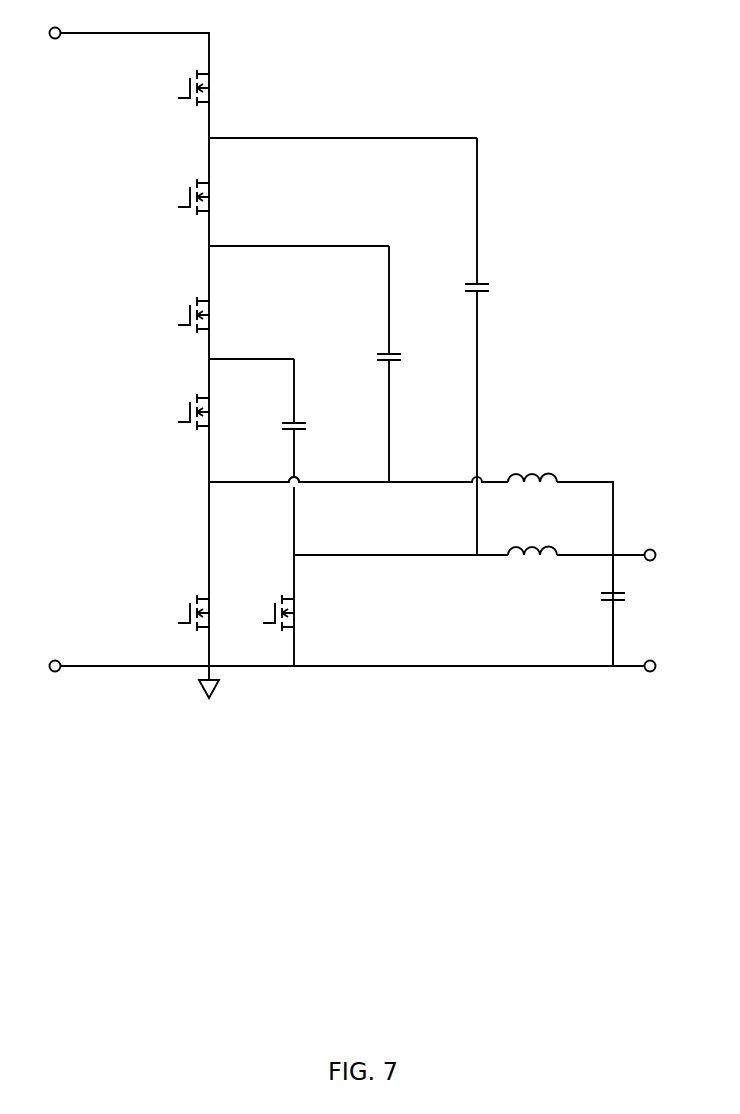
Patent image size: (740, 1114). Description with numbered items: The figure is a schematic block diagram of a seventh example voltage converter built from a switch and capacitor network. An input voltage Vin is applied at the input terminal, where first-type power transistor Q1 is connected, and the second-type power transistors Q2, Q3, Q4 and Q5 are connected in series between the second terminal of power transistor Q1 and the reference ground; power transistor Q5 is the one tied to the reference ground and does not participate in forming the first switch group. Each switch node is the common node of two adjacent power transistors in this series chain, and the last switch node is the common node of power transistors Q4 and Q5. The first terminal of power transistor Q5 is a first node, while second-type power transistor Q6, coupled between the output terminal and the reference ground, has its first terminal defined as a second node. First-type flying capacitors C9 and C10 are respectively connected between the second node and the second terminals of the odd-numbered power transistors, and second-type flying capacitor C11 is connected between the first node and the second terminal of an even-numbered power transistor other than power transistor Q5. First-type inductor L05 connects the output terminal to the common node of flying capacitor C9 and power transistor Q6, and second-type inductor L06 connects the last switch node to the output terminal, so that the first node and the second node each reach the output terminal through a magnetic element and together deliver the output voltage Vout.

The first-type power transistor Q1 is at (175, 88).
The second-type power transistor Q2 is at (175, 197).
The second-type power transistor Q3 is at (175, 315).
The second-type power transistor Q4 is at (175, 412).
The second-type power transistor Q5 is at (175, 613).
The second-type power transistor Q6 is at (261, 610).
The first-type flying capacitor C9 is at (311, 457).
The first-type flying capacitor C10 is at (501, 310).
The second-type flying capacitor C11 is at (413, 364).
The first-type inductor L05 is at (532, 571).
The second-type inductor L06 is at (532, 460).
The input voltage Vin is at (58, 336).
The output voltage Vout is at (638, 610).